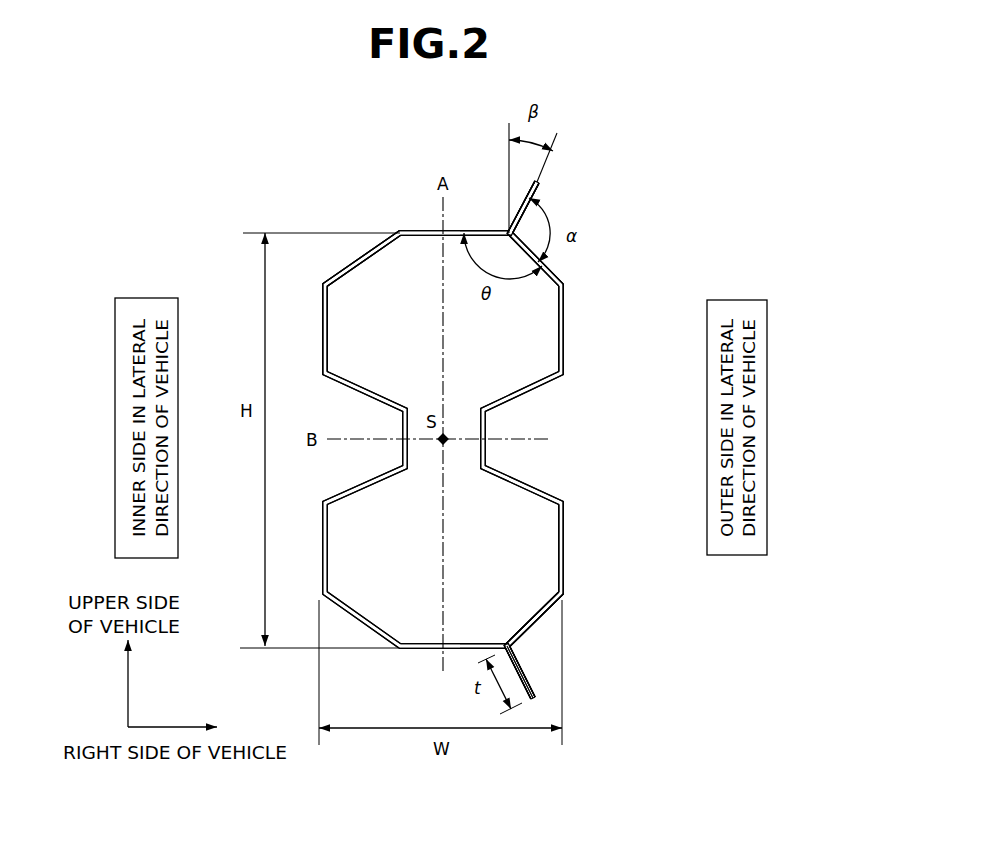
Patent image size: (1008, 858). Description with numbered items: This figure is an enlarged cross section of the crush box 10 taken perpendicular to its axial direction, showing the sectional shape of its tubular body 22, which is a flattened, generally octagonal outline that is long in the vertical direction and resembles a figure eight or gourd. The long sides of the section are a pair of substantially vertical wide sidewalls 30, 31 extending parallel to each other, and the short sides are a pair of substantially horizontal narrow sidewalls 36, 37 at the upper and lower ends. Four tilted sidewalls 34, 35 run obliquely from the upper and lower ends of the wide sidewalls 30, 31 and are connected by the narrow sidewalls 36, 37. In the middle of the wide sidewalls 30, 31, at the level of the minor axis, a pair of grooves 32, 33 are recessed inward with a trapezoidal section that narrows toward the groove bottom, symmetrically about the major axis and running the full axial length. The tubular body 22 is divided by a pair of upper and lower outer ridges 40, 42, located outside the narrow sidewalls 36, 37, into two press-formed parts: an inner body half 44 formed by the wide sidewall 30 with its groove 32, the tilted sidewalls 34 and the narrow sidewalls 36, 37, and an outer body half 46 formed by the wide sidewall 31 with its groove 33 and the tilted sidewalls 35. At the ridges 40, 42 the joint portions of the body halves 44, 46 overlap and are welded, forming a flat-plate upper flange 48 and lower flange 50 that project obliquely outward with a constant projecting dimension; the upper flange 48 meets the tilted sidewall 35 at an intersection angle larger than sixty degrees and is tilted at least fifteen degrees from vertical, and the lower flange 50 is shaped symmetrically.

The crush box 10 is at (312, 146).
The tubular body 22 is at (645, 283).
The wide sidewall 30 is at (320, 553).
The wide sidewall 31 is at (565, 340).
The groove 32 is at (345, 382).
The groove 33 is at (523, 483).
The tilted sidewall 34 is at (355, 262).
The tilted sidewall 35 is at (556, 268).
The narrow sidewall 36 is at (420, 229).
The narrow sidewall 37 is at (425, 650).
The upper outer ridge 40 is at (492, 212).
The lower outer ridge 42 is at (529, 651).
The inner body half 44 is at (298, 275).
The outer body half 46 is at (603, 546).
The upper flange 48 is at (540, 191).
The lower flange 50 is at (531, 681).